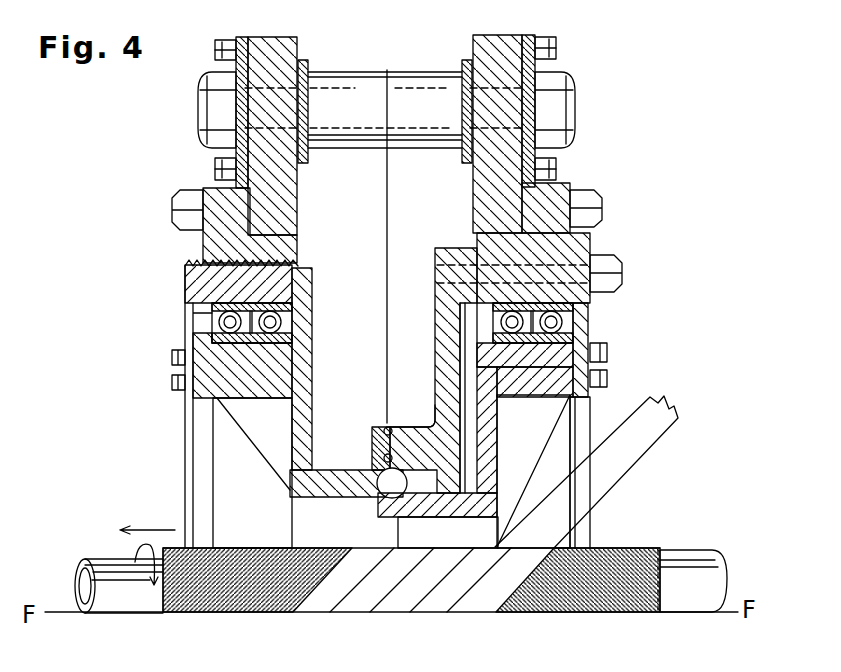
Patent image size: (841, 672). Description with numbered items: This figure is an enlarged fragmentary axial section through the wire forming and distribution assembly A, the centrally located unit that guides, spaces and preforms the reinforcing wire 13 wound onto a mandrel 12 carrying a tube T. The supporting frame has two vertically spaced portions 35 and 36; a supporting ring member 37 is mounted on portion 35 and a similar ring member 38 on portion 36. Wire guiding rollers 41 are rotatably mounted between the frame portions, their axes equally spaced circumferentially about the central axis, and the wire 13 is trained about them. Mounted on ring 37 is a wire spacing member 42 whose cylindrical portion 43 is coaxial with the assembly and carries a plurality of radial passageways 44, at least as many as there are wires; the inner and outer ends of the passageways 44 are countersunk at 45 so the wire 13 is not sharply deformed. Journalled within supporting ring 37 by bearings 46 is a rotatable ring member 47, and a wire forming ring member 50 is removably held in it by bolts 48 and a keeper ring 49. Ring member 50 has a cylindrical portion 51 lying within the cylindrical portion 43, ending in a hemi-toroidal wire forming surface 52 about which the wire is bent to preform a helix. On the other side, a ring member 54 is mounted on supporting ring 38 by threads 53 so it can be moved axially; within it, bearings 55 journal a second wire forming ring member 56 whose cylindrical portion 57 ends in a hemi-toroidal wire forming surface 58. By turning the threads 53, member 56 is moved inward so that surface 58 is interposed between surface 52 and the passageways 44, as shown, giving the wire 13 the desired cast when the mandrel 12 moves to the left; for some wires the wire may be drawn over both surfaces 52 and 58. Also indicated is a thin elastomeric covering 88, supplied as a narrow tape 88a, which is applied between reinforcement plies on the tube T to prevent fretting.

The mandrel 12 is at (118, 578).
The wire 13 is at (390, 85).
The frame portion 35 is at (492, 47).
The frame portion 36 is at (278, 48).
The supporting ring member 37 is at (548, 199).
The supporting ring member 38 is at (217, 193).
The wire guiding rollers 41 is at (333, 83).
The wire spacing member 42 is at (448, 340).
The cylindrical portion 43 is at (378, 447).
The radial passageways 44 is at (403, 408).
The countersinks 45 is at (388, 428).
The bearings 46 is at (563, 317).
The ring member 47 is at (563, 350).
The bolts 48 is at (612, 378).
The keeper ring 49 is at (573, 388).
The wire forming ring member 50 is at (488, 423).
The cylindrical portion 51 is at (455, 505).
The hemi-toroidal wire forming surface 52 is at (402, 517).
The threads 53 is at (218, 263).
The ring member 54 is at (193, 288).
The bearings 55 is at (230, 323).
The wire forming ring member 56 is at (230, 393).
The cylindrical portion 57 is at (343, 483).
The hemi-toroidal wire forming surface 58 is at (390, 470).
The elastomeric covering 88 is at (363, 603).
The tape 88a is at (588, 493).
The wire forming and distribution assembly A is at (651, 156).
The tube T is at (667, 547).